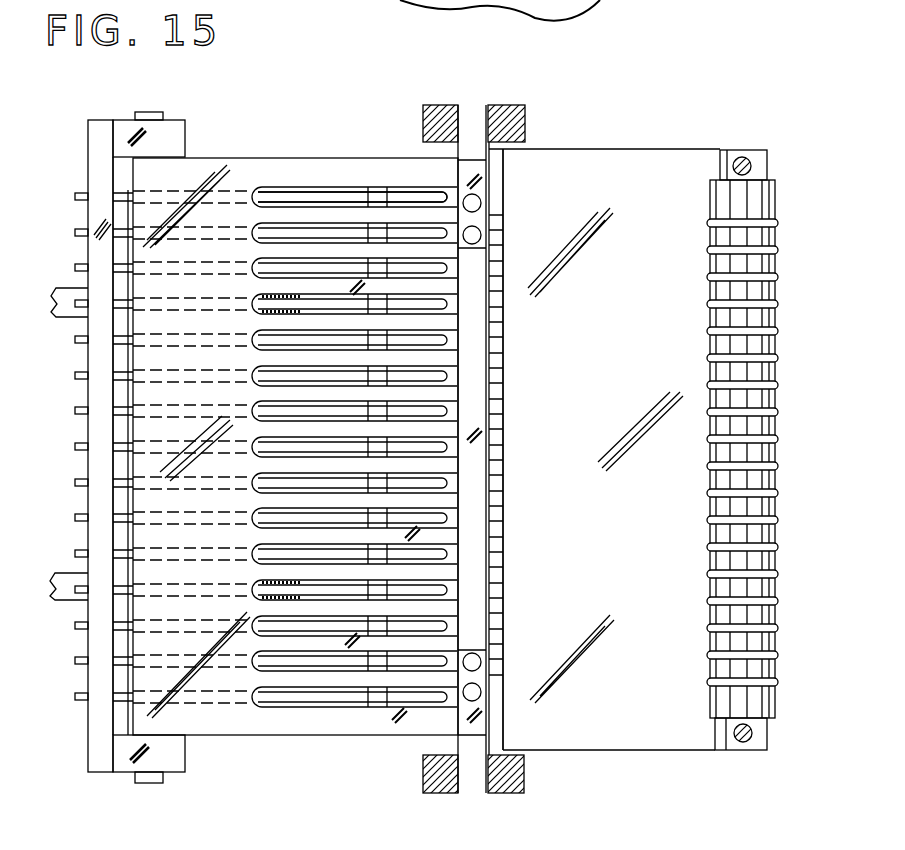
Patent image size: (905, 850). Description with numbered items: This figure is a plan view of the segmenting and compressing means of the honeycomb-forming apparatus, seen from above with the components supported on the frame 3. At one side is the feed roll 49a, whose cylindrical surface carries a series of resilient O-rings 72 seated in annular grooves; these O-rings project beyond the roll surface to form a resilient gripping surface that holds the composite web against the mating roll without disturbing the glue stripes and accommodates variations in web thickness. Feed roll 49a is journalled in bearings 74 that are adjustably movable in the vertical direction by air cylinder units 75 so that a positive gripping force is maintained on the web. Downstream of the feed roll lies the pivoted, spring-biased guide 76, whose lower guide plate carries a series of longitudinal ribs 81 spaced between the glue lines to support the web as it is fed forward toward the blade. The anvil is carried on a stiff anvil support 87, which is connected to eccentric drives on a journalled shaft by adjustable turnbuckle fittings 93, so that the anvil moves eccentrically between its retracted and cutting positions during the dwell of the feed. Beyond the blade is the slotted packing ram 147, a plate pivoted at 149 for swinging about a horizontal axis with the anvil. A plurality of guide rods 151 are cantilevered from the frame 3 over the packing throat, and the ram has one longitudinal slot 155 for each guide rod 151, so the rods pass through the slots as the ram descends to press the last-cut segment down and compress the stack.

The frame 3 is at (88, 432).
The pivot 149 is at (148, 112).
The packing ram 147 is at (249, 158).
The guide rods 151 is at (347, 190).
The longitudinal slots 155 is at (306, 190).
The adjustable turnbuckle fittings 93 is at (505, 105).
The anvil support 87 is at (500, 286).
The longitudinal ribs 81 is at (493, 350).
The guide 76 is at (627, 182).
The resilient O-rings 72 is at (778, 272).
The feed roll 49a is at (778, 204).
The bearings 74 is at (738, 150).
The air cylinder units 75 is at (752, 162).